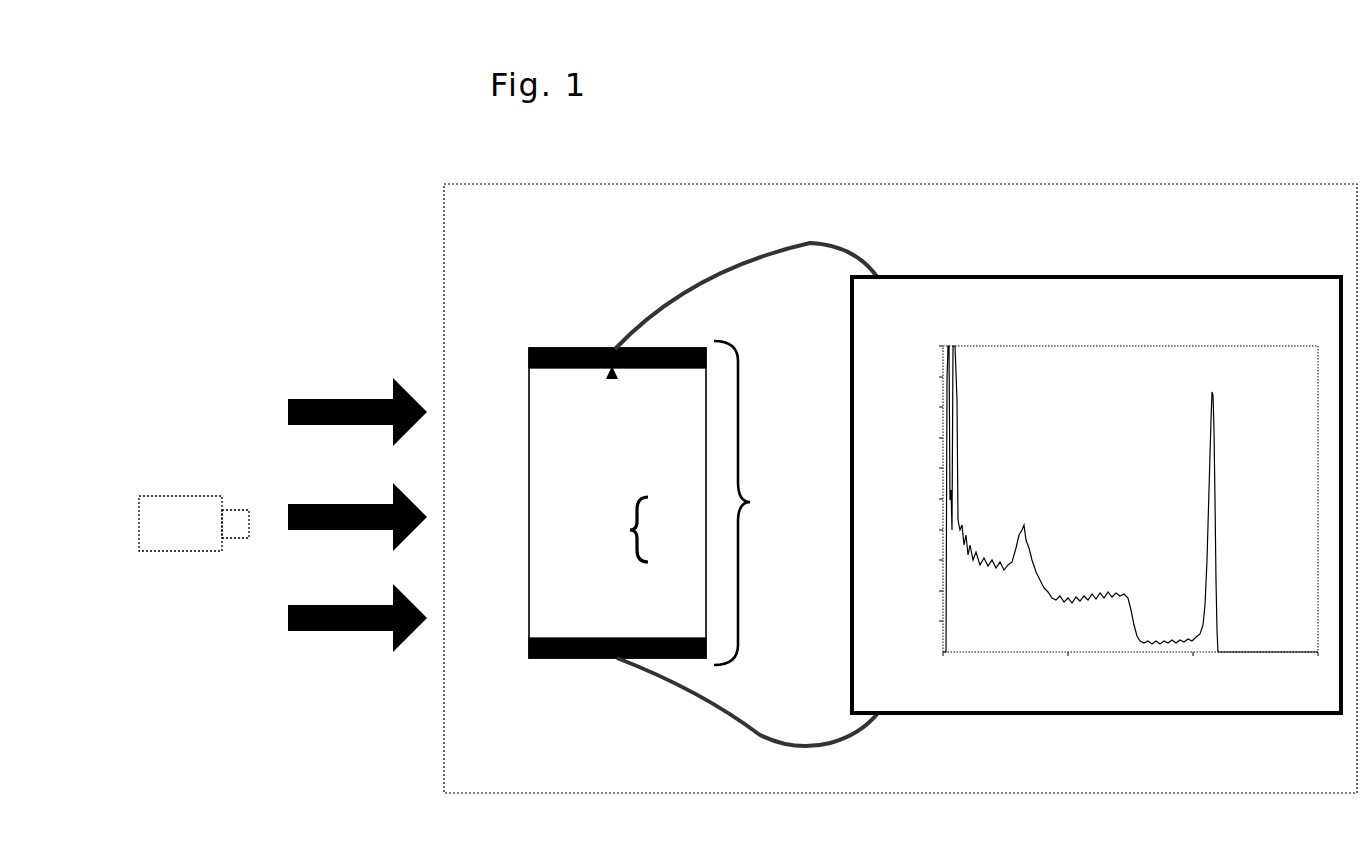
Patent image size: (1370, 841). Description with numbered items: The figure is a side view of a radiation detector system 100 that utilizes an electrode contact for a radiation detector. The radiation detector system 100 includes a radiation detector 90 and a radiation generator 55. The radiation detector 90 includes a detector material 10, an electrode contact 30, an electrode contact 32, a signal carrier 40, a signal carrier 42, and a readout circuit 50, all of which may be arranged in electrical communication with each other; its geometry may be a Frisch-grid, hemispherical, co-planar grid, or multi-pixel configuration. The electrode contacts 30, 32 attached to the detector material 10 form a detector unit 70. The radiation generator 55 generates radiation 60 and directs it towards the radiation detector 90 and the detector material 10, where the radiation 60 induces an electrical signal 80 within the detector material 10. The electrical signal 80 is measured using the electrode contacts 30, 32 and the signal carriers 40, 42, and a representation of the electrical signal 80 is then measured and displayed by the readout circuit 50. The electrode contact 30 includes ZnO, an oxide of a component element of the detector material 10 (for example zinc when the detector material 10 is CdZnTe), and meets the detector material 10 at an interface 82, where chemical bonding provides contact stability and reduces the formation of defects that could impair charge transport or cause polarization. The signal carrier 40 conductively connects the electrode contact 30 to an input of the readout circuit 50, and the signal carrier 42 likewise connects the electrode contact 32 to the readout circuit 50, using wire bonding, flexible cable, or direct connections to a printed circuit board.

The radiation detector system 100 is at (566, 164).
The detector material 10 is at (617, 503).
The electrode contact 30 is at (582, 358).
The electrode contact 32 is at (573, 650).
The signal carrier 40 is at (808, 243).
The signal carrier 42 is at (798, 747).
The readout circuit 50 is at (1096, 495).
The radiation generator 55 is at (170, 500).
The radiation 60 is at (331, 618).
The detector unit 70 is at (751, 503).
The electrical signal 80 is at (627, 520).
The interface 82 is at (612, 376).
The radiation detector 90 is at (1072, 225).